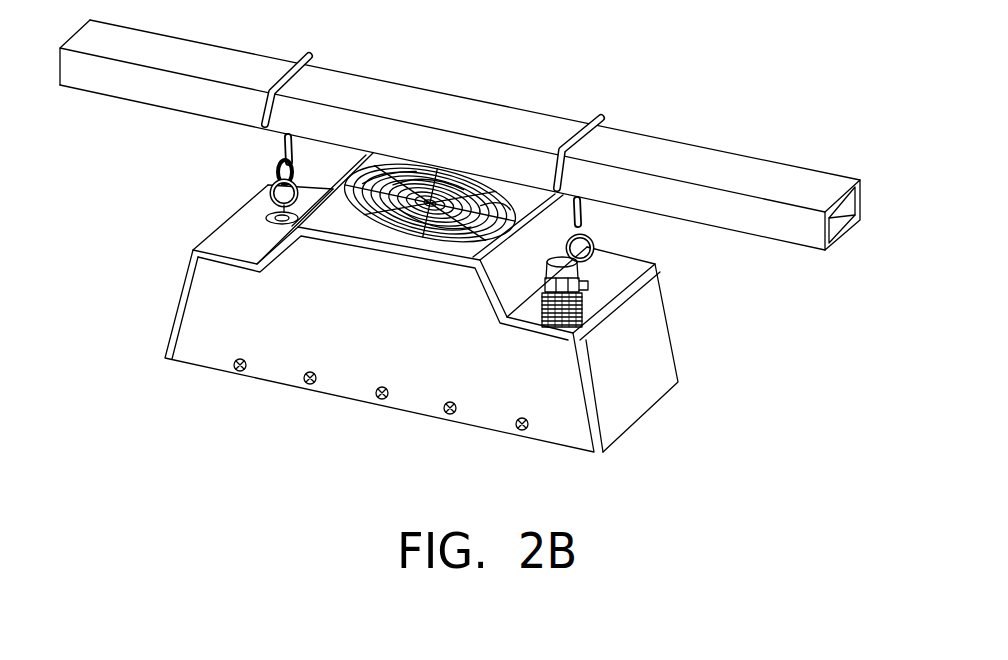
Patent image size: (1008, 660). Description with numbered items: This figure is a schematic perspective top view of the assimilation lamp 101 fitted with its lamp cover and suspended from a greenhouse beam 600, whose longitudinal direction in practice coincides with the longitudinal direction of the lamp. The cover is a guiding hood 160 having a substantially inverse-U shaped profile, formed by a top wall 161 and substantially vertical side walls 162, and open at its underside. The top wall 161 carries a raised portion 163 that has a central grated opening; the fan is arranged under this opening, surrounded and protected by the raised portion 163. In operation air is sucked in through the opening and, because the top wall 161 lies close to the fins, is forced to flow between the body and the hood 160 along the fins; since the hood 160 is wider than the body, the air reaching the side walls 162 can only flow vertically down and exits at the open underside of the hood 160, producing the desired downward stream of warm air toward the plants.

The assimilation lamp 101 is at (435, 315).
The guiding hood 160 is at (235, 310).
The top wall 161 is at (247, 237).
The side walls 162 is at (632, 362).
The raised portion 163 is at (537, 248).
The greenhouse beam 600 is at (705, 158).